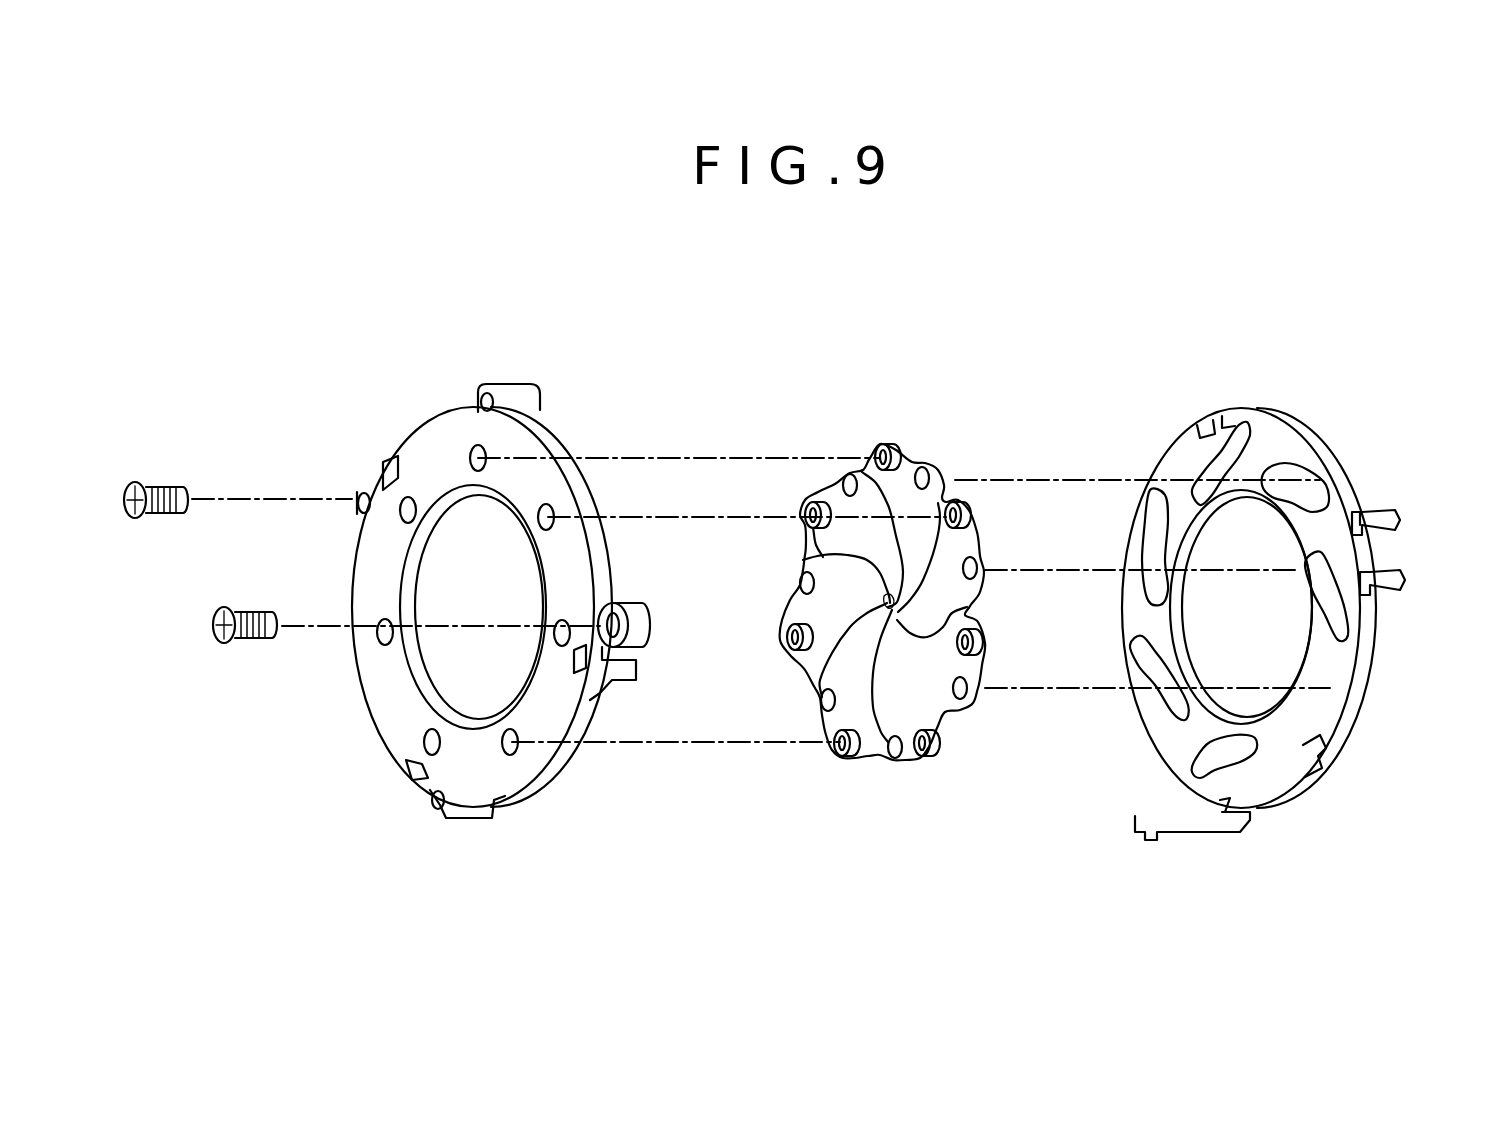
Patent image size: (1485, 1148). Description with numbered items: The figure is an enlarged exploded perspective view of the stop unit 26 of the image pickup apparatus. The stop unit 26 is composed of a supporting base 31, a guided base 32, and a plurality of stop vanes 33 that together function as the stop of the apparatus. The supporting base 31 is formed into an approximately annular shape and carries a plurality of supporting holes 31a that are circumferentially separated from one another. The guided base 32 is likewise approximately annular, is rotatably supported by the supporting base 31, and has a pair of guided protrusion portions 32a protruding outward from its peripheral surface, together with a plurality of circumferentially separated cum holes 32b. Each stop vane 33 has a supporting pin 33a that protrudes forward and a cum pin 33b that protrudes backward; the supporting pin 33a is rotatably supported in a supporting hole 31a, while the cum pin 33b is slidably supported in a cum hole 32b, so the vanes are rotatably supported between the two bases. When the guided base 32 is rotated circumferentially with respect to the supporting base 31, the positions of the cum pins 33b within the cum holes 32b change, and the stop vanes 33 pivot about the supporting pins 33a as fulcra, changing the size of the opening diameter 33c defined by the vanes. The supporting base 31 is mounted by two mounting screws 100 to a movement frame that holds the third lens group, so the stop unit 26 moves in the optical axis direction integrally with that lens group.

The stop unit 26 is at (336, 322).
The supporting base 31 is at (428, 448).
The supporting hole 31a is at (474, 445).
The guided base 32 is at (1185, 455).
The guided protrusion portion 32a is at (1380, 515).
The cum hole 32b is at (1215, 445).
The stop vane 33 is at (905, 470).
The supporting pin 33a is at (877, 448).
The cum pin 33b is at (940, 470).
The opening diameter 33c is at (882, 596).
The mounting screw 100 is at (135, 520).